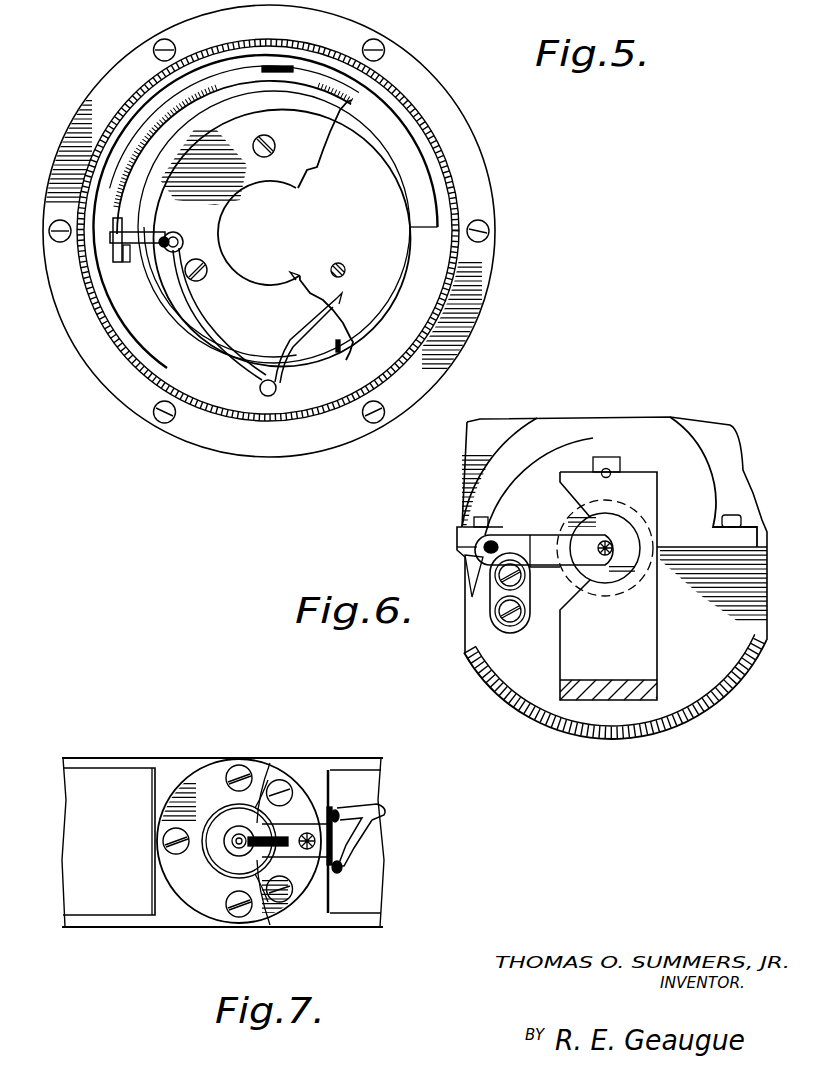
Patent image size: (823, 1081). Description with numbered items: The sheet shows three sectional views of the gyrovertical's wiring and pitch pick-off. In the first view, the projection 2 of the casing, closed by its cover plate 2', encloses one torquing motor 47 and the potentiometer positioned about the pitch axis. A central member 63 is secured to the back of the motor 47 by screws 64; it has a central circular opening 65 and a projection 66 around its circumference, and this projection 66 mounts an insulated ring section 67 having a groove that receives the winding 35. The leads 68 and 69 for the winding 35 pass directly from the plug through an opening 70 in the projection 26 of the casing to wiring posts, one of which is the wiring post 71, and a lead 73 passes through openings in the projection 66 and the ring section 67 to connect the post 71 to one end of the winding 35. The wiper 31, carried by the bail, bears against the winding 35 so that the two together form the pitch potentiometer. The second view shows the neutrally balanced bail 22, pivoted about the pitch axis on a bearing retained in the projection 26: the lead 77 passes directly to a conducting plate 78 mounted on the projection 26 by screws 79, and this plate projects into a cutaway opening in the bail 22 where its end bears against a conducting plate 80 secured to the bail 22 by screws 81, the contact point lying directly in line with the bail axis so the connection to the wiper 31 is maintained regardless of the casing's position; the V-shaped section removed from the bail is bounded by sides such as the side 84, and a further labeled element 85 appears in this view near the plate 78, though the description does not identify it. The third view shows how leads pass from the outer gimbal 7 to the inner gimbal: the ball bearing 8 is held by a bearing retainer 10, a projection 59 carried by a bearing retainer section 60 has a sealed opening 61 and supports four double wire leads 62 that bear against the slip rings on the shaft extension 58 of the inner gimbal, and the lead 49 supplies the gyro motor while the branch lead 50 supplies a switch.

In FIG. 5, the projection 26 is at (143, 358).
In FIG. 6, the projection 26 is at (695, 687).
In FIG. 5, the cover plate 2' is at (292, 230).
In FIG. 5, the motor 47 is at (400, 260).
In FIG. 5, the winding 35 is at (214, 82).
In FIG. 5, the wiper 31 is at (289, 66).
In FIG. 5, the screws 64 is at (276, 147).
In FIG. 5, the central member 63 is at (219, 192).
In FIG. 5, the central circular opening 65 is at (288, 272).
In FIG. 5, the projection 66 is at (338, 354).
In FIG. 5, the lead 68 is at (238, 323).
In FIG. 5, the lead 69 is at (296, 323).
In FIG. 5, the opening 70 is at (278, 385).
In FIG. 5, the wiring post 71 is at (176, 236).
In FIG. 5, the lead 73 is at (157, 232).
In FIG. 5, the insulated ring section 67 is at (127, 267).
In FIG. 6, the projection 2 is at (615, 698).
In FIG. 6, the bail 22 is at (645, 620).
In FIG. 6, the conducting plate 80 is at (603, 460).
In FIG. 6, the screws 81 is at (608, 470).
In FIG. 6, the shaft boss 85 is at (562, 493).
In FIG. 6, the side 84 is at (560, 608).
In FIG. 6, the conducting plate 78 is at (513, 540).
In FIG. 6, the lead 77 is at (486, 550).
In FIG. 6, the screws 79 is at (514, 582).
In FIG. 7, the outer gimbal 7 is at (73, 887).
In FIG. 7, the bearing retainer 10 is at (207, 905).
In FIG. 7, the bearing retainer section 60 is at (285, 780).
In FIG. 7, the double wire leads 62 is at (223, 805).
In FIG. 7, the ball bearing 8 is at (215, 860).
In FIG. 7, the shaft extension 58 is at (237, 843).
In FIG. 7, the sealed opening 61 is at (305, 853).
In FIG. 7, the projection 59 is at (305, 828).
In FIG. 7, the lead 49 is at (370, 806).
In FIG. 7, the branch lead 50 is at (367, 828).